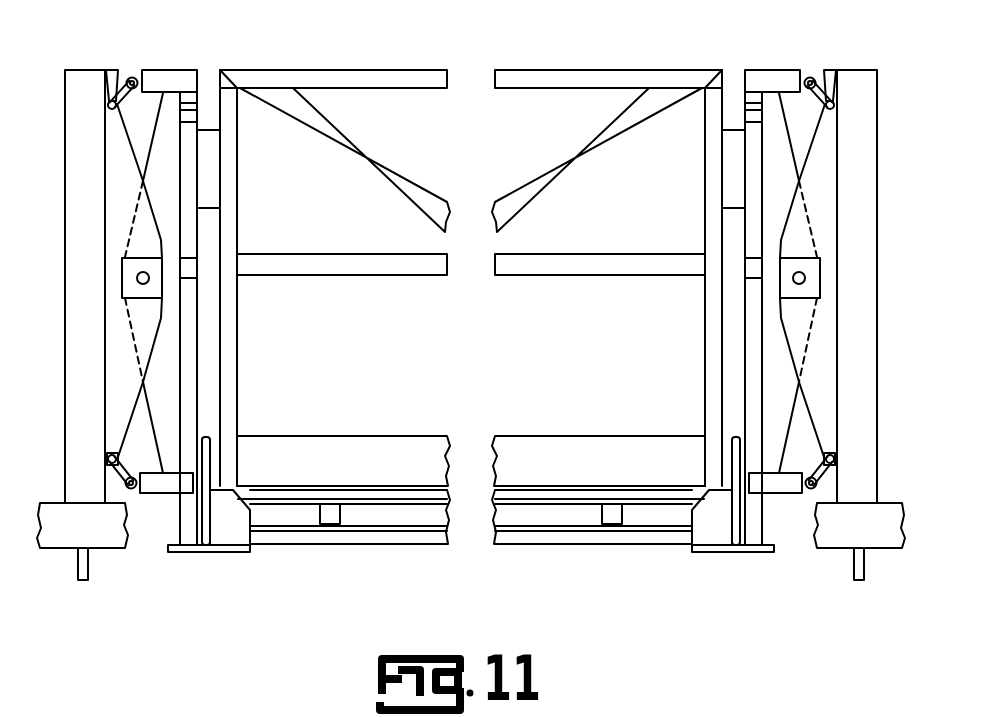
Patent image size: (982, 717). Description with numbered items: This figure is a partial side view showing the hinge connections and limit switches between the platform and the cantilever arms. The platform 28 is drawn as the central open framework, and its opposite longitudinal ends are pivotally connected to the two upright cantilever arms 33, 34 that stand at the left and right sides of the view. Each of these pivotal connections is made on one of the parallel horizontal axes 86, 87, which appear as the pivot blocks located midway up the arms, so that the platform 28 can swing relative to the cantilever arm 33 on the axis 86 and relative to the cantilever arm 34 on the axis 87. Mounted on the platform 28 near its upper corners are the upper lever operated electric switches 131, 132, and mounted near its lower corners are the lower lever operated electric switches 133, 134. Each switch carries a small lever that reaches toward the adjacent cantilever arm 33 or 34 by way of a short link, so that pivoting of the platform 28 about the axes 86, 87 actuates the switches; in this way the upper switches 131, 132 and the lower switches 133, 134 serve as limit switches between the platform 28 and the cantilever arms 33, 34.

The platform 28 is at (353, 70).
The cantilever arm 33 is at (66, 221).
The cantilever arm 34 is at (878, 207).
The horizontal axis 86 is at (122, 280).
The horizontal axis 87 is at (820, 280).
The upper lever operated electric switch 131 is at (166, 80).
The upper lever operated electric switch 132 is at (770, 73).
The lower lever operated electric switch 133 is at (160, 494).
The lower lever operated electric switch 134 is at (782, 494).